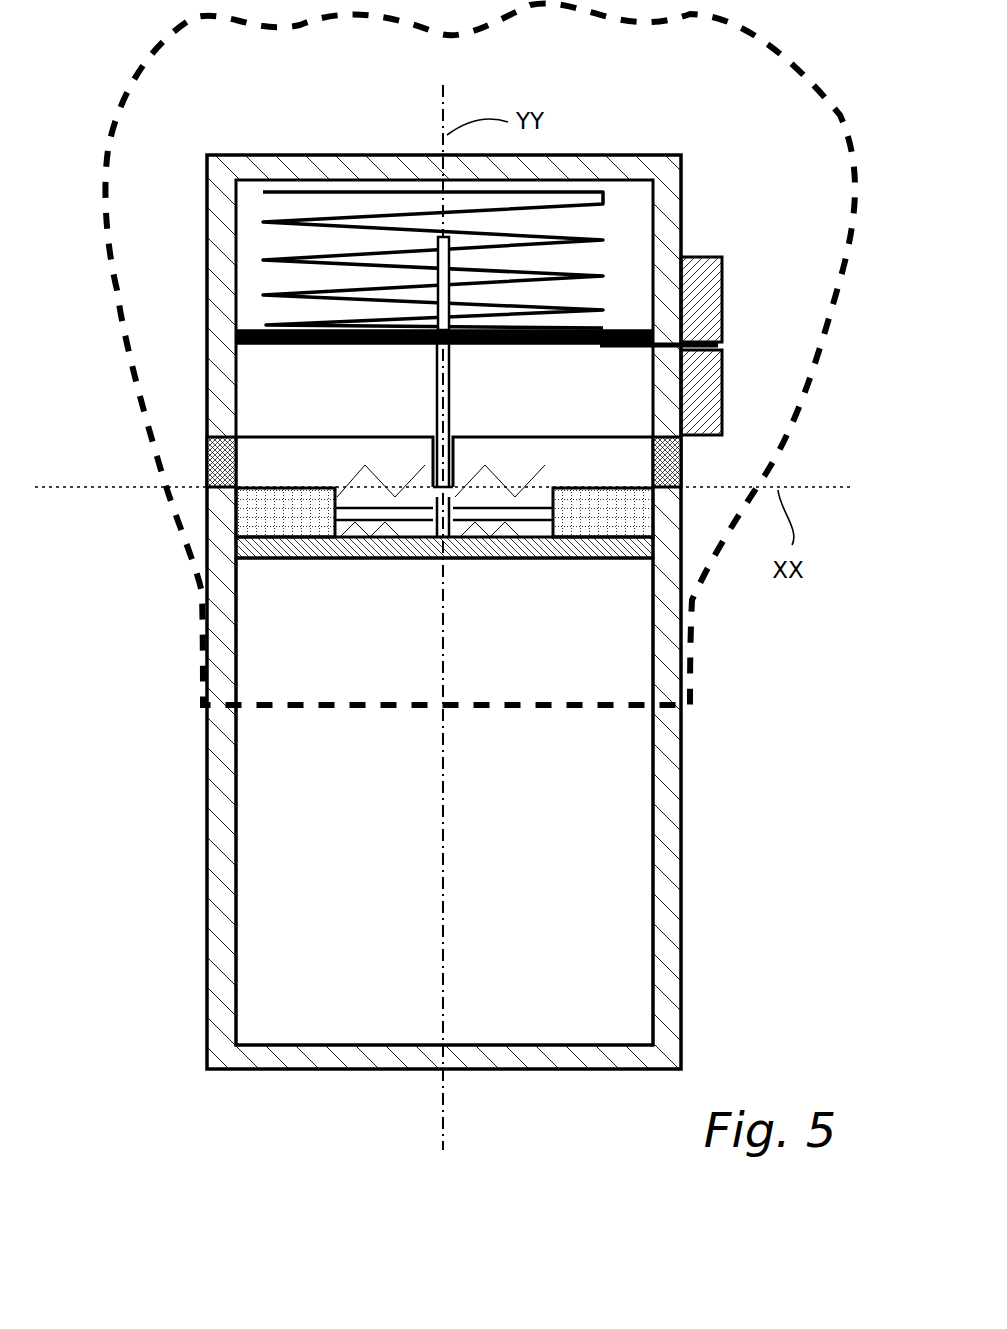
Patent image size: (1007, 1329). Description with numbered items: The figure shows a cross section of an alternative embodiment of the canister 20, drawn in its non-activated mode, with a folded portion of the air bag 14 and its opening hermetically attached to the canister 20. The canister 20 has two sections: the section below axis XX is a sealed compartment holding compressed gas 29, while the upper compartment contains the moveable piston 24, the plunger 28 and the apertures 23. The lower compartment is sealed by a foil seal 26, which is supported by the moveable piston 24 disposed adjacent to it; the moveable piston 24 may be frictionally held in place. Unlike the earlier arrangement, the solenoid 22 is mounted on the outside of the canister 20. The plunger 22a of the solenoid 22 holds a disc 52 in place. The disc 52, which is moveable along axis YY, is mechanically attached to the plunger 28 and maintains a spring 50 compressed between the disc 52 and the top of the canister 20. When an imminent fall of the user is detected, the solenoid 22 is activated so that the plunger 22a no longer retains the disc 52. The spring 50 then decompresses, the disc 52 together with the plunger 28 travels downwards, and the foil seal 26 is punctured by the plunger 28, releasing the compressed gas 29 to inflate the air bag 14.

The air bag 14 is at (118, 107).
The canister 20 is at (207, 237).
The solenoid 22 is at (723, 285).
The plunger 22a is at (612, 349).
The apertures 23 is at (217, 463).
The moveable piston 24 is at (528, 450).
The foil seal 26 is at (356, 537).
The plunger 28 is at (437, 372).
The compressed gas 29 is at (593, 845).
The spring 50 is at (603, 200).
The disc 52 is at (288, 345).